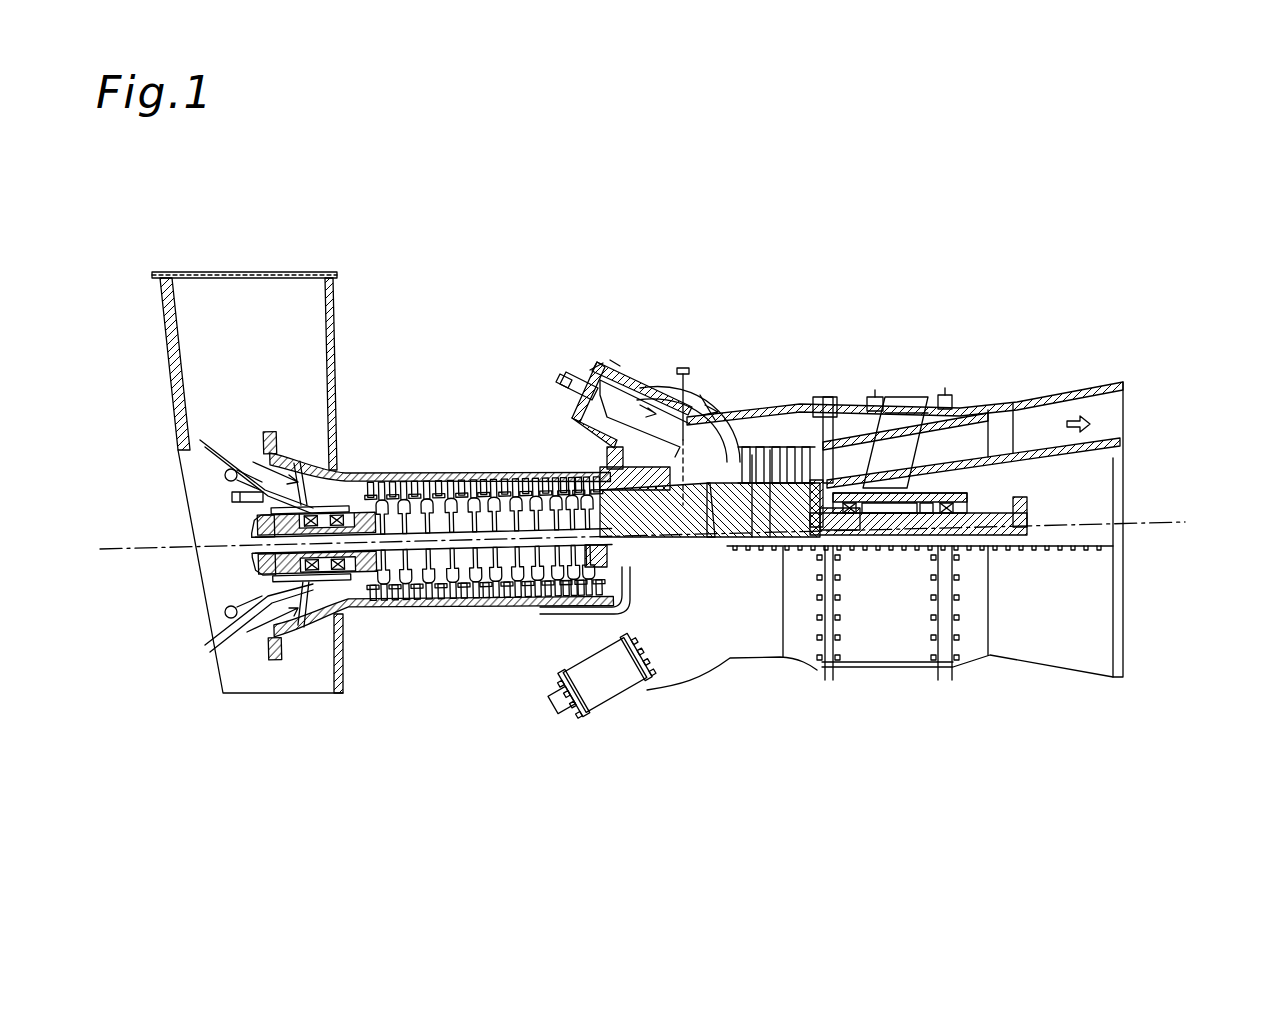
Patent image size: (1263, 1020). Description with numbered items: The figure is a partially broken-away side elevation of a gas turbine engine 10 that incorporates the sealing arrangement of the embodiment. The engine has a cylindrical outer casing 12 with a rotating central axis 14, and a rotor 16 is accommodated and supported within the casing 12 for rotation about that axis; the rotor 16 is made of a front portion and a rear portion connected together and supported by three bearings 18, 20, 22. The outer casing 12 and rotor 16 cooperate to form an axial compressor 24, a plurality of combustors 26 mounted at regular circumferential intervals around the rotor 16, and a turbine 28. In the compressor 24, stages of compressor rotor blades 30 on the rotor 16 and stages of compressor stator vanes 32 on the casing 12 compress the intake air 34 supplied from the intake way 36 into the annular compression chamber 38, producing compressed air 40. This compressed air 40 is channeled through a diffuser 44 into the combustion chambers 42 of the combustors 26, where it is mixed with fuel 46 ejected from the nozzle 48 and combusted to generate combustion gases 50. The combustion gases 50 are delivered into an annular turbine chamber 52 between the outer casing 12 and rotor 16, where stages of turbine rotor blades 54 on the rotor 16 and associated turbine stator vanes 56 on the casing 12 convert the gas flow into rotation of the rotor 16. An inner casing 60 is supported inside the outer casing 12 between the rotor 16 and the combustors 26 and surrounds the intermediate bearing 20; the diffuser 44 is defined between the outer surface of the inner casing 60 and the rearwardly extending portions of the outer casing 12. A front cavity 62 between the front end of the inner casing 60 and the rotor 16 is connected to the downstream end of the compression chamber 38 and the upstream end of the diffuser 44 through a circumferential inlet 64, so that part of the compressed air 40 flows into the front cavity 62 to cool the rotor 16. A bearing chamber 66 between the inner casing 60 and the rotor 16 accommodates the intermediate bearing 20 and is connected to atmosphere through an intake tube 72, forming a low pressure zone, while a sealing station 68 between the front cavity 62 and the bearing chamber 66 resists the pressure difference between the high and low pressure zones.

The gas turbine engine 10 is at (1103, 373).
The outer casing 12 is at (1027, 640).
The central axis 14 is at (1183, 518).
The rotor 16 is at (1030, 512).
The bearing 18 is at (367, 620).
The intermediate bearing 20 is at (710, 540).
The bearing 22 is at (960, 485).
The axial compressor 24 is at (480, 610).
The combustor 26 is at (623, 373).
The turbine 28 is at (803, 440).
The compressor rotor blades 30 is at (397, 620).
The compressor stator vanes 32 is at (428, 478).
The intake air 34 is at (250, 250).
The intake way 36 is at (213, 380).
The compression chamber 38 is at (357, 484).
The compressed air 40 is at (655, 403).
The combustion chamber 42 is at (662, 420).
The diffuser 44 is at (603, 475).
The fuel 46 is at (557, 377).
The nozzle 48 is at (607, 393).
The combustion gases 50 is at (718, 470).
The turbine chamber 52 is at (778, 480).
The turbine rotor blades 54 is at (820, 535).
The turbine stator vanes 56 is at (790, 547).
The inner casing 60 is at (733, 425).
The front cavity 62 is at (643, 567).
The inlet 64 is at (603, 620).
The bearing chamber 66 is at (743, 540).
The sealing station 68 is at (677, 567).
The intake tube 72 is at (686, 370).